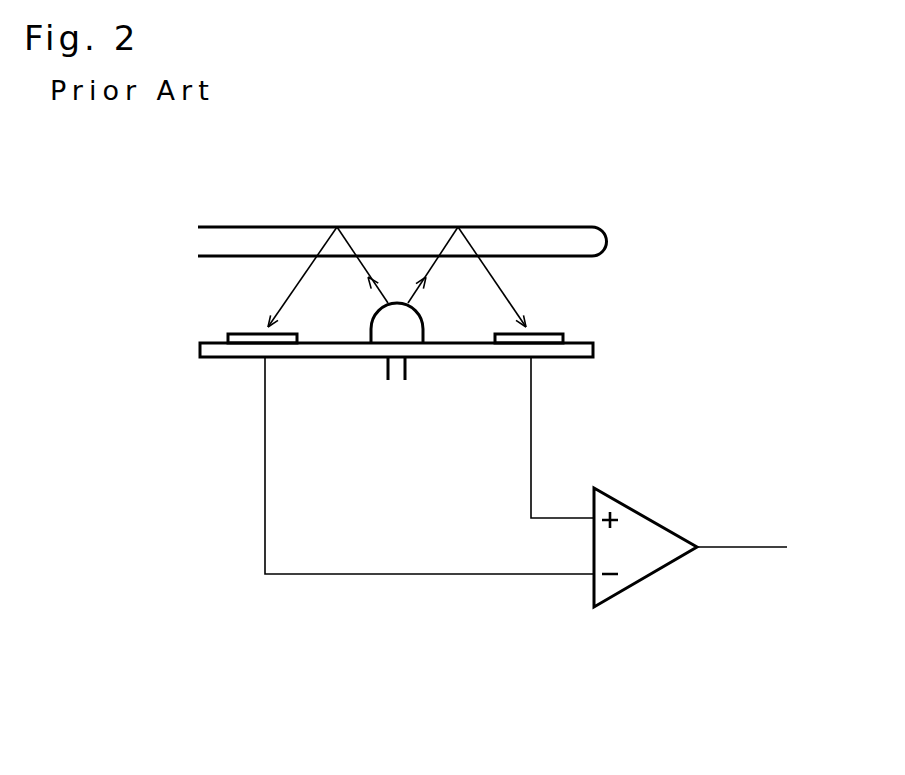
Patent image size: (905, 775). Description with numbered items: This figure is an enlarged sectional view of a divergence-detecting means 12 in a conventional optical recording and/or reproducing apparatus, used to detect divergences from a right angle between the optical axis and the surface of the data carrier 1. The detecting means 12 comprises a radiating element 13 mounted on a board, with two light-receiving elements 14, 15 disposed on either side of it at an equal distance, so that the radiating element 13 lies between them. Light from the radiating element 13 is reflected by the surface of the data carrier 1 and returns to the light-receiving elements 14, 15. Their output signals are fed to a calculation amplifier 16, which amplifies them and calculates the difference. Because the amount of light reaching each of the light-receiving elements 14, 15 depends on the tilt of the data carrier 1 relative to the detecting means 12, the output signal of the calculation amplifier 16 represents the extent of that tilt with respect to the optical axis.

The data carrier 1 is at (604, 232).
The divergence-detecting means 12 is at (593, 347).
The radiating element 13 is at (382, 335).
The light-receiving element 14 is at (240, 333).
The light-receiving element 15 is at (560, 333).
The calculation amplifier 16 is at (655, 520).